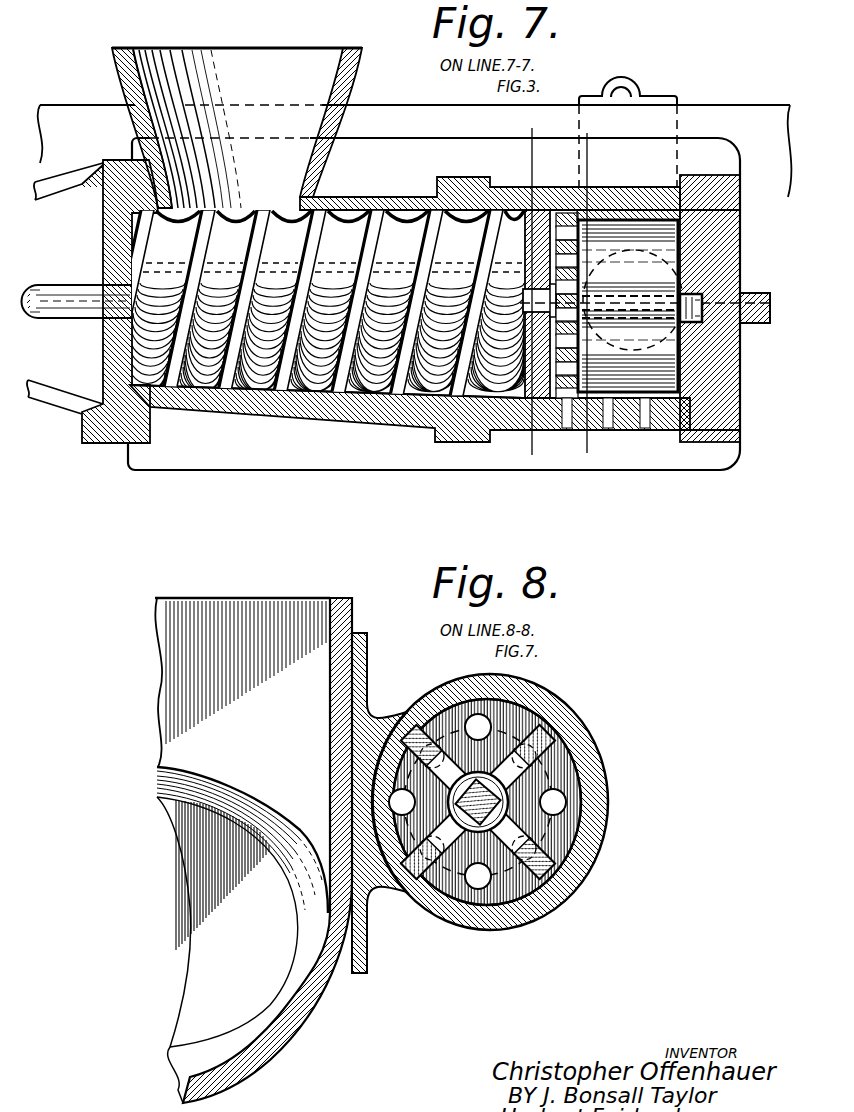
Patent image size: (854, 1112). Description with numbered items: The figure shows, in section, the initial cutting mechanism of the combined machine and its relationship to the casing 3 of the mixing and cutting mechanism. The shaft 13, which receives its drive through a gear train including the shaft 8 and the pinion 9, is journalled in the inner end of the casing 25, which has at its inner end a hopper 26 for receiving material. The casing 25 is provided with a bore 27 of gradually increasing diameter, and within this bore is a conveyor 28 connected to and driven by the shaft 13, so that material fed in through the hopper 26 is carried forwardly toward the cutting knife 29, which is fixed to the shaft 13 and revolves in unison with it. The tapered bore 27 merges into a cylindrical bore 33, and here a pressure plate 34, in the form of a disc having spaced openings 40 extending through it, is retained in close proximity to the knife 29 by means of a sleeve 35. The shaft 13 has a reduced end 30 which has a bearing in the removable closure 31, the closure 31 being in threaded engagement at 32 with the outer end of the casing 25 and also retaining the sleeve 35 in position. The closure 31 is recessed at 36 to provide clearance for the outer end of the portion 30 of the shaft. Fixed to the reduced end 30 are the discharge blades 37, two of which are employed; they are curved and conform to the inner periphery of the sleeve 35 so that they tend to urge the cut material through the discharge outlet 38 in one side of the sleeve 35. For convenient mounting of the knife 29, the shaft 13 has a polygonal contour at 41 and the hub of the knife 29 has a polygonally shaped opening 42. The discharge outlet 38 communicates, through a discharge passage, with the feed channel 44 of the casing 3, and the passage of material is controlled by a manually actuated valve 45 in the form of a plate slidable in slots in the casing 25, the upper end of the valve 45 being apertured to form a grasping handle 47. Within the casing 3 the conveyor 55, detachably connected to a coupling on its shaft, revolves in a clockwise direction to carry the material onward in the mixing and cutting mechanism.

In FIG. 8, the casing 3 is at (311, 1020).
In FIG. 7, the shaft 8 is at (529, 292).
In FIG. 7, the pinion 9 is at (587, 293).
In FIG. 7, the shaft 13 is at (62, 296).
In FIG. 7, the casing of the initial cutting mechanism 25 is at (378, 412).
In FIG. 8, the casing of the initial cutting mechanism 25 is at (553, 714).
In FIG. 7, the hopper 26 is at (237, 128).
In FIG. 7, the bore 27 is at (305, 393).
In FIG. 7, the conveyor 28 is at (312, 303).
In FIG. 7, the cutting knife 29 is at (527, 280).
In FIG. 8, the cutting knife 29 is at (421, 732).
In FIG. 7, the reduced end 30 is at (700, 298).
In FIG. 7, the removable closure 31 is at (717, 360).
In FIG. 7, the threaded engagement 32 is at (738, 428).
In FIG. 7, the cylindrical bore 33 is at (608, 410).
In FIG. 8, the cylindrical bore 33 is at (533, 892).
In FIG. 7, the pressure plate 34 is at (565, 410).
In FIG. 8, the pressure plate 34 is at (550, 826).
In FIG. 7, the sleeve 35 is at (645, 410).
In FIG. 8, the sleeve 35 is at (497, 893).
In FIG. 7, the recess 36 is at (703, 310).
In FIG. 7, the discharge blades 37 is at (650, 200).
In FIG. 7, the discharge outlet 38 is at (633, 265).
In FIG. 7, the spaced openings 40 is at (564, 212).
In FIG. 8, the spaced openings 40 is at (555, 802).
In FIG. 7, the polygonal contour 41 is at (553, 320).
In FIG. 8, the polygonal contour 41 is at (503, 797).
In FIG. 7, the polygonally shaped opening 42 is at (548, 294).
In FIG. 8, the polygonally shaped opening 42 is at (480, 795).
In FIG. 8, the feed channel 44 is at (242, 850).
In FIG. 7, the manually actuated valve 45 is at (642, 100).
In FIG. 7, the grasping handle 47 is at (628, 76).
In FIG. 8, the conveyor 55 is at (292, 983).